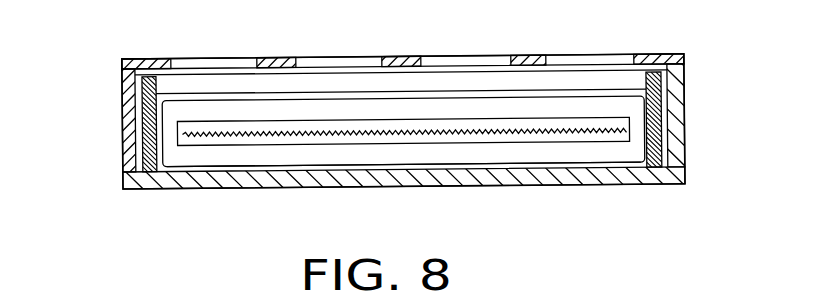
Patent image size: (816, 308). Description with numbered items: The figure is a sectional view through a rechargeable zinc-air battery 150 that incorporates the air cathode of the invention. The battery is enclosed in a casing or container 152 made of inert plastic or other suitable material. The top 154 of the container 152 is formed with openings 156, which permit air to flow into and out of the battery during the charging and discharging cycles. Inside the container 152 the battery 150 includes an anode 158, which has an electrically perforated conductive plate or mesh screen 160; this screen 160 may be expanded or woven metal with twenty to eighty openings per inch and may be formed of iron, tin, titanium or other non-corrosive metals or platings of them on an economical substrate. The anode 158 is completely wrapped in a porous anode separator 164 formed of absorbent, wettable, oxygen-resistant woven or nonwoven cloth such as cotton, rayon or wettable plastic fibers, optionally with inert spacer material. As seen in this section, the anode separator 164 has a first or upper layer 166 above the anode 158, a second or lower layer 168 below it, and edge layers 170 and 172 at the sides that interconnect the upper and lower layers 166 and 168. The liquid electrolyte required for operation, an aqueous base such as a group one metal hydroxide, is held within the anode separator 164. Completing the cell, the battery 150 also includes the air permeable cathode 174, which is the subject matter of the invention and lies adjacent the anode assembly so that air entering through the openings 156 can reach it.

The rechargeable zinc-air battery 150 is at (732, 113).
The casing or container 152 is at (122, 73).
The top of container 154 is at (400, 57).
The openings 156 is at (213, 58).
The anode 158 is at (317, 145).
The perforated conductive plate or mesh screen 160 is at (450, 130).
The porous anode separator 164 is at (214, 157).
The first or upper layer 166 is at (455, 108).
The second or lower layer 168 is at (568, 150).
The edge layer 170 is at (633, 147).
The edge layer 172 is at (180, 157).
The air permeable cathode 174 is at (563, 88).